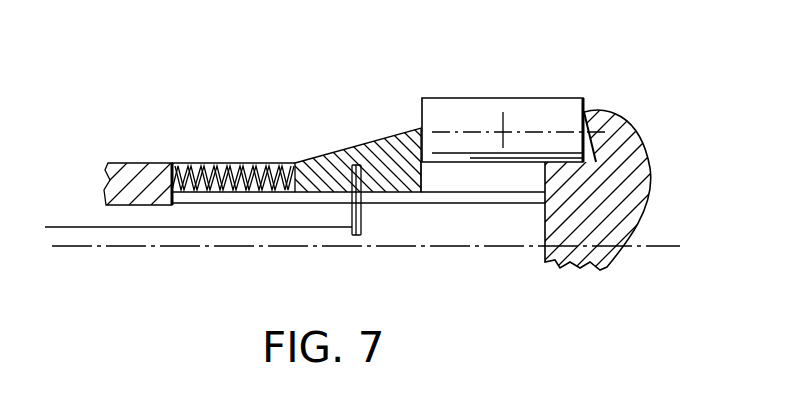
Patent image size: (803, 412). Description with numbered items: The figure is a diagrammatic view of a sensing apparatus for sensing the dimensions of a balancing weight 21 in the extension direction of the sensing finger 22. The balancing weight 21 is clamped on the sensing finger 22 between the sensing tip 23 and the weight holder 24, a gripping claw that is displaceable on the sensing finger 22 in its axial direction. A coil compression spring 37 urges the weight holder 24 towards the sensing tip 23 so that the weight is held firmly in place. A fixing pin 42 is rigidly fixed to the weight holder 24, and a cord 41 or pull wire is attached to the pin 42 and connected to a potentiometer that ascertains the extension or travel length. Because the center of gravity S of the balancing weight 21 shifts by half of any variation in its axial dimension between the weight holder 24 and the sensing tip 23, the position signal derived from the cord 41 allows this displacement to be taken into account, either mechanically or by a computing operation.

The balancing weight 21 is at (448, 115).
The sensing finger 22 is at (337, 133).
The sensing tip 23 is at (620, 149).
The weight holder 24 is at (388, 157).
The coil compression spring 37 is at (212, 165).
The cord 41 is at (207, 228).
The fixing pin 42 is at (361, 212).
The center of gravity S is at (513, 130).